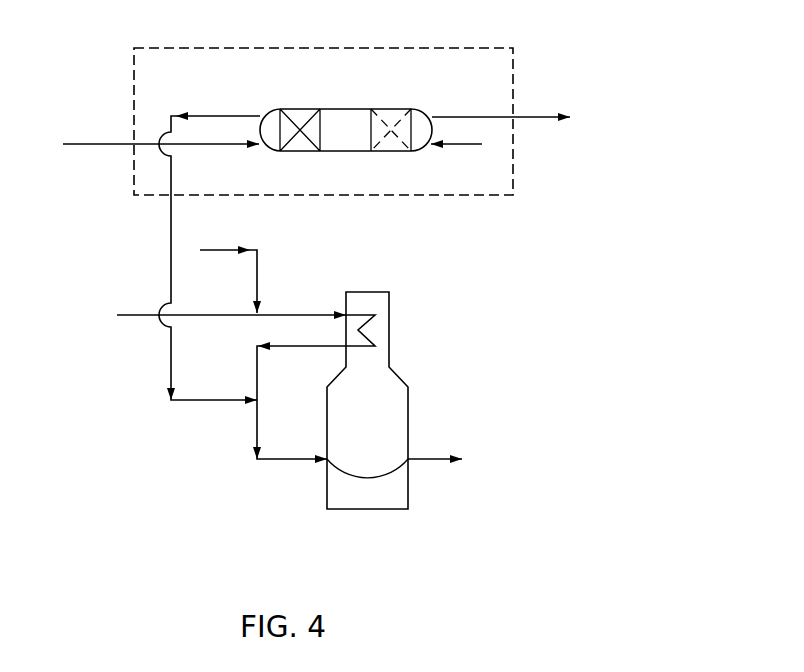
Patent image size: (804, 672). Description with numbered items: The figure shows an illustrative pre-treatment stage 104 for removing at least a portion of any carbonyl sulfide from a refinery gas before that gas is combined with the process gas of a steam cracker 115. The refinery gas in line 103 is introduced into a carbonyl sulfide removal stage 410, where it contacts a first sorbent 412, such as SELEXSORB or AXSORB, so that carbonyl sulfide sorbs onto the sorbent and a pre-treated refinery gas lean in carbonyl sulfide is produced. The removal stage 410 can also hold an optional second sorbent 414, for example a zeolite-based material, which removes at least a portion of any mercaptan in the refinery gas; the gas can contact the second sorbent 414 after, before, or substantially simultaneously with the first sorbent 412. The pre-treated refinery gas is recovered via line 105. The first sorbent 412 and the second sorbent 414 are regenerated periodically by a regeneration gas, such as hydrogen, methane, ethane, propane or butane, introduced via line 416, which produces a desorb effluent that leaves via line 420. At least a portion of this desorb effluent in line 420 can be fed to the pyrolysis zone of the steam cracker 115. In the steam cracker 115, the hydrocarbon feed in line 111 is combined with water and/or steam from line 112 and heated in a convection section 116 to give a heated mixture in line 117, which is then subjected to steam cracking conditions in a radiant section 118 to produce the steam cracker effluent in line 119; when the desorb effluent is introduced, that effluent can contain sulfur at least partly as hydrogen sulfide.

The pre-treatment stage 104 is at (187, 47).
The refinery gas line 103 is at (96, 142).
The pre-treated refinery gas line 105 is at (533, 113).
The regeneration gas line 416 is at (465, 148).
The carbonyl sulfide removal stage 410 is at (342, 107).
The first sorbent 412 is at (291, 107).
The second sorbent 414 is at (402, 107).
The desorb effluent line 420 is at (170, 232).
The water and/or steam line 112 is at (227, 246).
The hydrocarbon feed line 111 is at (207, 312).
The heated mixture line 117 is at (258, 376).
The steam cracker 115 is at (364, 290).
The convection section 116 is at (409, 305).
The radiant section 118 is at (346, 525).
The steam cracker effluent line 119 is at (432, 457).